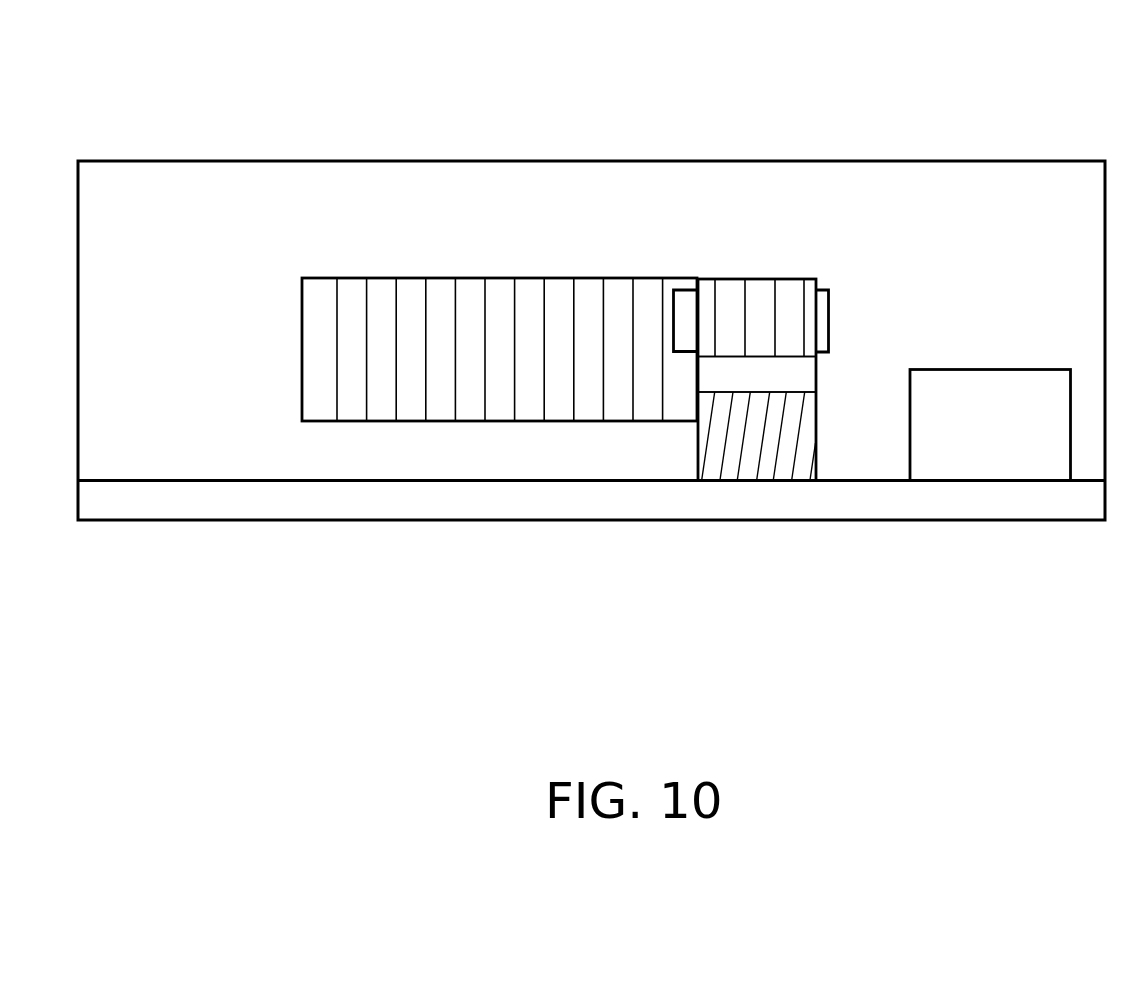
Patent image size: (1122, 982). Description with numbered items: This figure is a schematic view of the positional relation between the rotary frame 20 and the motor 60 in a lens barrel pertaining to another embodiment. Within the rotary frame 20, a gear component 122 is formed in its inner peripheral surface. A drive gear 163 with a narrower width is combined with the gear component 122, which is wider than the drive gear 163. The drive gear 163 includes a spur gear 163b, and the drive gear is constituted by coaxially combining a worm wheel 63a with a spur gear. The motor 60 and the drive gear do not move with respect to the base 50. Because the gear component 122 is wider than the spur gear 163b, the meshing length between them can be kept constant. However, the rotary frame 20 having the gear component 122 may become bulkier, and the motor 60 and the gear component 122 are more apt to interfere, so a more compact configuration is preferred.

The rotary frame 20 is at (235, 138).
The base 50 is at (255, 508).
The gear component 122 is at (497, 308).
The drive gear 163 is at (769, 342).
The spur gear 163b is at (770, 306).
The worm wheel 63a is at (761, 452).
The motor 60 is at (1002, 452).